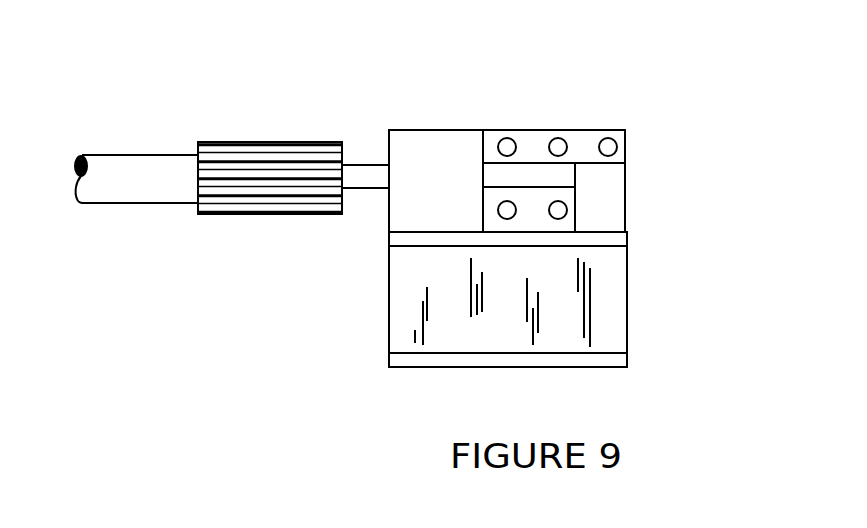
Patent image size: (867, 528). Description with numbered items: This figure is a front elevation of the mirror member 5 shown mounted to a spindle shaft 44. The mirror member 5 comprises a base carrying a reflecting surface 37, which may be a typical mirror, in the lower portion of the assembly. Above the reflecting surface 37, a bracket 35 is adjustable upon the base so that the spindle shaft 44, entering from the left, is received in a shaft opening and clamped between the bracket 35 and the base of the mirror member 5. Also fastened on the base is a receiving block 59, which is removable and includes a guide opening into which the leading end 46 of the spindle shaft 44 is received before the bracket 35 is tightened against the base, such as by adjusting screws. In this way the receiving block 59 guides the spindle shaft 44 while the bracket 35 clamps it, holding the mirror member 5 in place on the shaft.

The mirror member 5 is at (639, 233).
The bracket 35 is at (430, 157).
The reflecting surface 37 is at (608, 303).
The spindle shaft 44 is at (370, 175).
The leading end 46 is at (575, 180).
The receiving block 59 is at (608, 201).